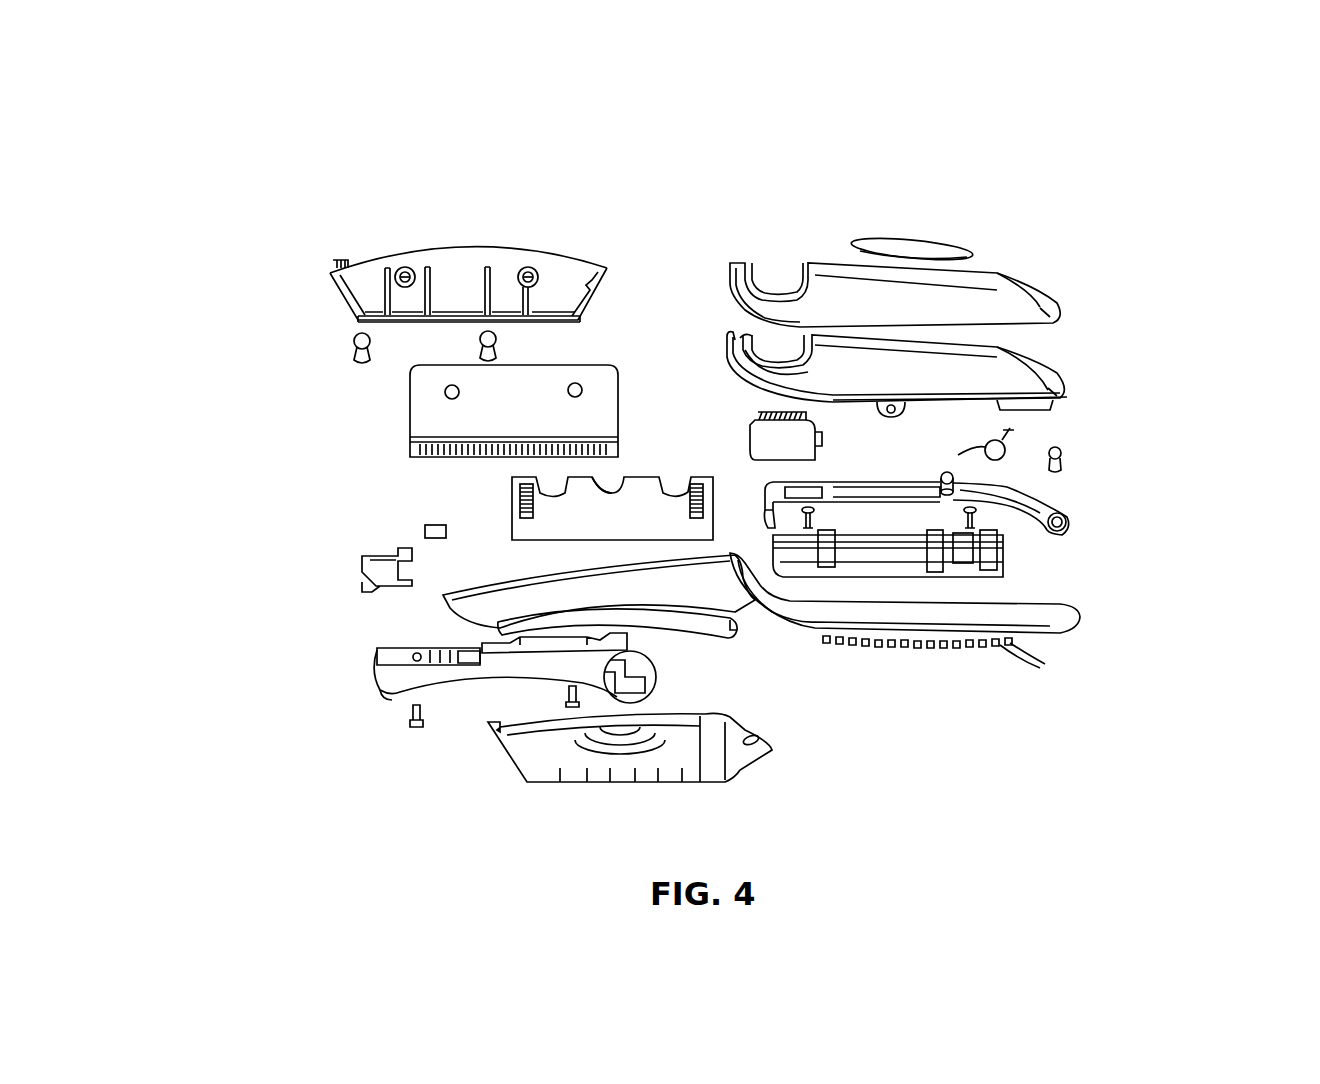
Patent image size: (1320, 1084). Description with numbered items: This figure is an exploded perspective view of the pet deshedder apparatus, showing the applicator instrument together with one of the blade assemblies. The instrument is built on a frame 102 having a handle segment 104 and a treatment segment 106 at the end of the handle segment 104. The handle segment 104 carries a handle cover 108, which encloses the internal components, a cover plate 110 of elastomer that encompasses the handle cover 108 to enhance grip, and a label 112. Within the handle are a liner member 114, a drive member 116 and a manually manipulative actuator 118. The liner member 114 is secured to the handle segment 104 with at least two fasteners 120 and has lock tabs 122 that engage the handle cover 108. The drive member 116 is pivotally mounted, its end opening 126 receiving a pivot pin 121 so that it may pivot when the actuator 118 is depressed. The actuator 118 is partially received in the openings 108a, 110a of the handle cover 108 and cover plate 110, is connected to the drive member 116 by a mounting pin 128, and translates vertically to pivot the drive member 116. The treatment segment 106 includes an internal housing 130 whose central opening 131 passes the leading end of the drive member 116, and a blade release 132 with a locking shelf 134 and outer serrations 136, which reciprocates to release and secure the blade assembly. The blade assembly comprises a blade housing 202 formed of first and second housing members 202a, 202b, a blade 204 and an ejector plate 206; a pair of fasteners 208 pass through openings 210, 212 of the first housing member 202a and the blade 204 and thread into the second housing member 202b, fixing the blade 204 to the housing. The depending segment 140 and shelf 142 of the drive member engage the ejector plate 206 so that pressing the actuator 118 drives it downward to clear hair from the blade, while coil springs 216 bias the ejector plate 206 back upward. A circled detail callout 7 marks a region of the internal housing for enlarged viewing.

The frame 102 is at (870, 660).
The handle segment 104 is at (1143, 628).
The treatment segment 106 is at (528, 584).
The handle cover 108 is at (847, 367).
The opening of the handle cover 108a is at (747, 362).
The cover plate 110 is at (975, 295).
The opening of the cover plate 110a is at (786, 288).
The label 112 is at (903, 247).
The liner member 114 is at (1000, 570).
The drive member 116 is at (1035, 498).
The actuator 118 is at (772, 440).
The fasteners 120 is at (812, 527).
The pivot pin 121 is at (1062, 450).
The lock tabs 122 is at (918, 520).
The opening of the drive member 126 is at (1062, 518).
The mounting pin 128 is at (745, 350).
The internal housing 130 is at (397, 682).
The central opening 131 is at (517, 633).
The blade release 132 is at (352, 597).
The locking shelf 134 is at (395, 556).
The serrations 136 is at (425, 530).
The depending segment 140 is at (835, 502).
The shelf 142 is at (810, 495).
The blade housing 202 is at (290, 208).
The first housing member 202a is at (452, 272).
The second housing member 202b is at (538, 758).
The blade 204 is at (428, 412).
The ejector plate 206 is at (517, 530).
The fasteners 208 is at (480, 345).
The openings of the first housing member 210 is at (400, 268).
The openings of the blade 212 is at (460, 390).
The coil springs 216 is at (617, 481).
The detail view circle 7 is at (655, 680).